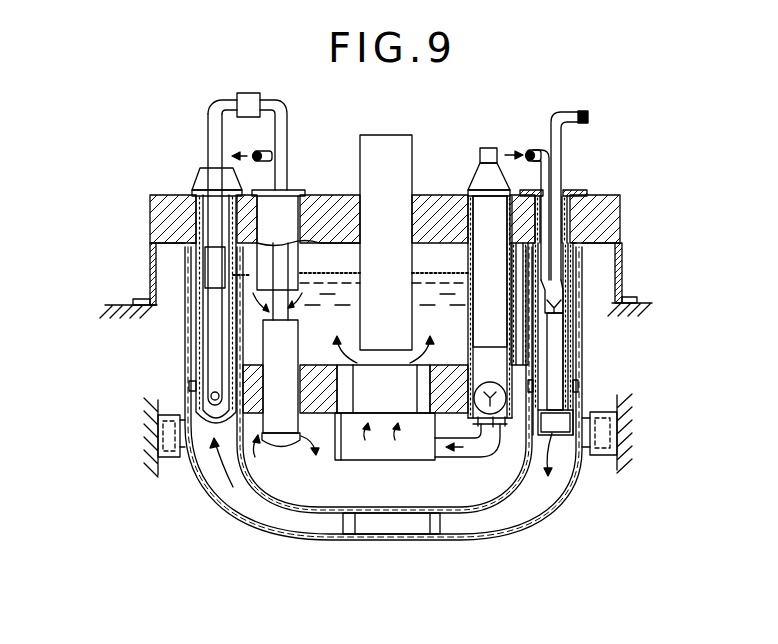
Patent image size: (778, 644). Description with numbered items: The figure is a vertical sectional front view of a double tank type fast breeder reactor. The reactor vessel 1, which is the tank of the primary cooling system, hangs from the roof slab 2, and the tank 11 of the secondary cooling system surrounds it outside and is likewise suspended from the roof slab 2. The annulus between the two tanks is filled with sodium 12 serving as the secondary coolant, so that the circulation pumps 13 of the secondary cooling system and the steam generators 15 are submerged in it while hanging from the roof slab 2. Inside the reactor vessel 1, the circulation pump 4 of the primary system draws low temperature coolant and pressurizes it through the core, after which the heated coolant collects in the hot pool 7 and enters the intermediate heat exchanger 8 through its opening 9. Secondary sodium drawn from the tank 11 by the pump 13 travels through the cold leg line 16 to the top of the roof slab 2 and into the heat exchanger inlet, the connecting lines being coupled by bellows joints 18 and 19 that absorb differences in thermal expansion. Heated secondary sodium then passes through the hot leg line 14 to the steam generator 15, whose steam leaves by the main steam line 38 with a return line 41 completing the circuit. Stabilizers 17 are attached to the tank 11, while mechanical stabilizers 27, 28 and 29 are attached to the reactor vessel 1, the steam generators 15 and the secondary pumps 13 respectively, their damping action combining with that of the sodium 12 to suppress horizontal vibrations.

The reactor vessel 1 is at (473, 494).
The roof slab 2 is at (607, 194).
The circulation pump 4 is at (488, 147).
The hot pool 7 is at (437, 317).
The intermediate heat exchanger 8 is at (288, 203).
The opening 9 is at (306, 298).
The tank of the secondary cooling system 11 is at (557, 503).
The sodium 12 is at (196, 324).
The circulation pump of the secondary cooling system 13 is at (200, 180).
The hot leg line 14 is at (265, 143).
The steam generator 15 is at (583, 190).
The cold leg line 16 is at (209, 118).
The stabilizer 17 is at (603, 458).
The joint 18 is at (205, 268).
The joint 19 is at (238, 93).
The mechanical stabilizer 27 is at (333, 523).
The mechanical stabilizer 28 is at (580, 374).
The mechanical stabilizer 29 is at (189, 385).
The main steam line 38 is at (594, 164).
The return line 41 is at (563, 112).